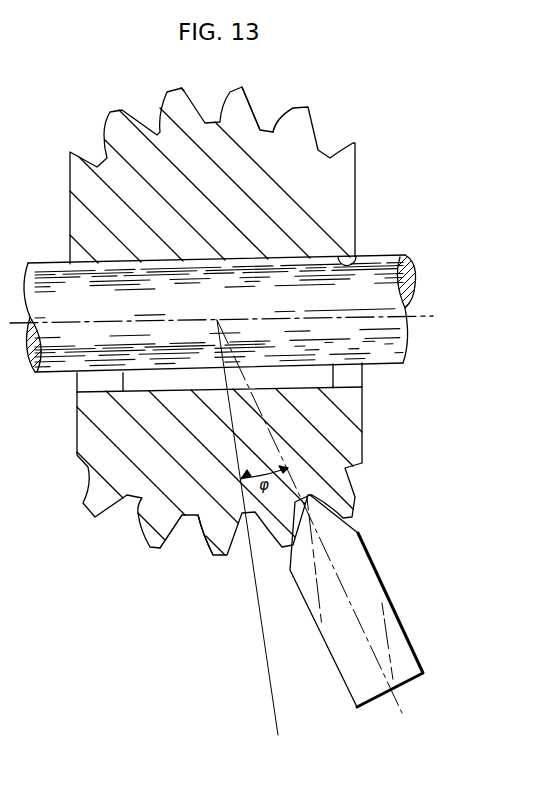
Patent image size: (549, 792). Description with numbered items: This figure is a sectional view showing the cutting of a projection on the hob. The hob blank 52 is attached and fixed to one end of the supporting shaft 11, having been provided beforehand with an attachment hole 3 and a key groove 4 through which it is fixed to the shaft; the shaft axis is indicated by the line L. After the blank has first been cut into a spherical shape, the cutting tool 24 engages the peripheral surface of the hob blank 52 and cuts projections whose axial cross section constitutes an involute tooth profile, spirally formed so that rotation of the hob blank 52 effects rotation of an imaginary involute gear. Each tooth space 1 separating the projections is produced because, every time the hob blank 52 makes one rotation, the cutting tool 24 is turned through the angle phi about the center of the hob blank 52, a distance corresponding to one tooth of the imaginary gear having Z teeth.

The hob blank 52 is at (332, 193).
The tooth gap 1 is at (257, 99).
The attachment hole 3 is at (357, 257).
The supporting shaft 11 is at (412, 345).
The shaft axis L is at (428, 315).
The key groove 4 is at (350, 379).
The cutting tool 24 is at (390, 597).